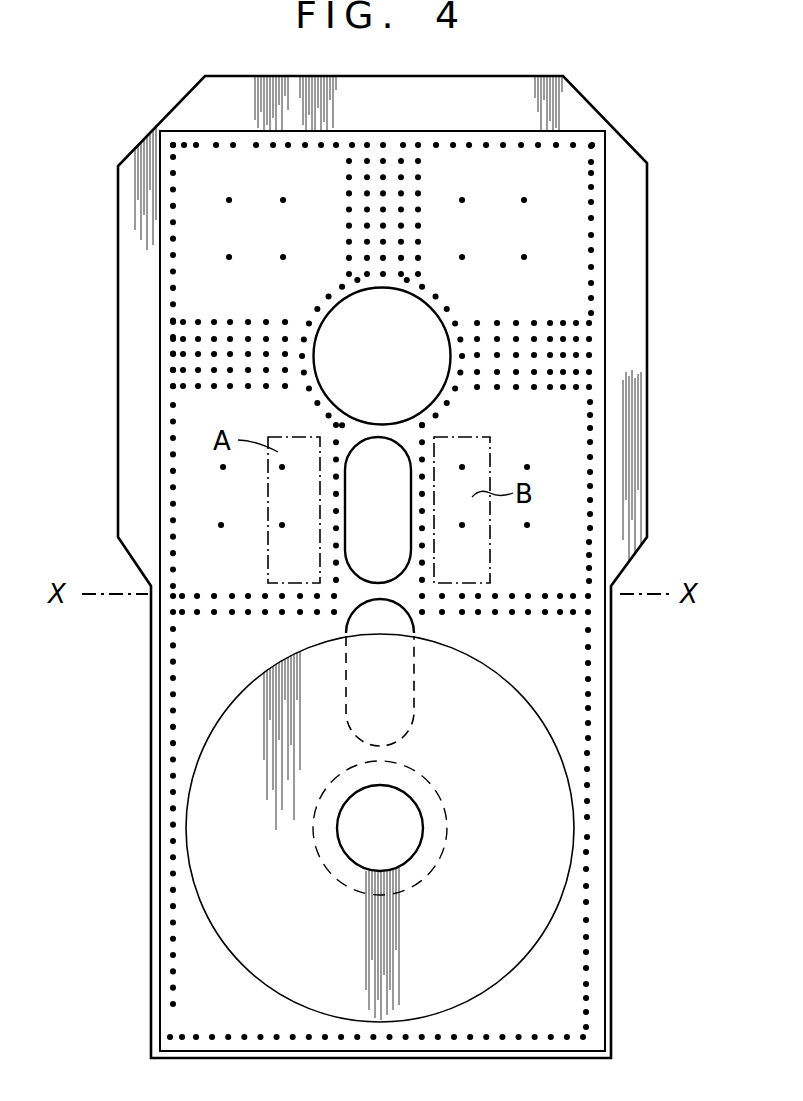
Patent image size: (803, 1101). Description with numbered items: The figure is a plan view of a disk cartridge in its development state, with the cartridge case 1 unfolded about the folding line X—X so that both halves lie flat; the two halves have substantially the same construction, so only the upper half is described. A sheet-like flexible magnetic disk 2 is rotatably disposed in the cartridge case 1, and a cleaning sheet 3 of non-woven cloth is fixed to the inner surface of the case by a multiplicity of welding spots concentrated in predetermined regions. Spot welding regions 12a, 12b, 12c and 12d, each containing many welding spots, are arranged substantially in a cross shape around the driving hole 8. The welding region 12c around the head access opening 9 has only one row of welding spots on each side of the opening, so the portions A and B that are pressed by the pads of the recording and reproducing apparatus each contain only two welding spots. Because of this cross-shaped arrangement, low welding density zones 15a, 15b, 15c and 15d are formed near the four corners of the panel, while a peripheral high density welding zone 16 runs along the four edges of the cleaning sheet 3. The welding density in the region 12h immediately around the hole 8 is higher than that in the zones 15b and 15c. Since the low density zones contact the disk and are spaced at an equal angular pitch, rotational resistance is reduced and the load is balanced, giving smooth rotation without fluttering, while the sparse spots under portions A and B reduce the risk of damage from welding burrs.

The cartridge case 1 is at (177, 108).
The flexible magnetic disk 2 is at (533, 948).
The cleaning sheet 3 is at (152, 306).
The driving hole 8 is at (314, 365).
The head access opening 9 is at (345, 553).
The spot welding region 12a is at (400, 160).
The spot welding region 12b is at (180, 372).
The spot welding region 12c is at (335, 530).
The spot welding region 12d is at (590, 352).
The welding region around the hole 12h is at (434, 290).
The low welding density zone 15a is at (240, 235).
The low welding density zone 15b is at (230, 492).
The low welding density zone 15c is at (528, 445).
The low welding density zone 15d is at (510, 240).
The peripheral high density welding zone 16 is at (597, 292).